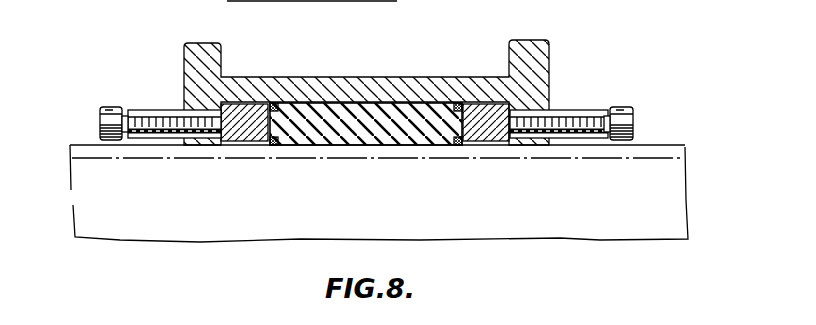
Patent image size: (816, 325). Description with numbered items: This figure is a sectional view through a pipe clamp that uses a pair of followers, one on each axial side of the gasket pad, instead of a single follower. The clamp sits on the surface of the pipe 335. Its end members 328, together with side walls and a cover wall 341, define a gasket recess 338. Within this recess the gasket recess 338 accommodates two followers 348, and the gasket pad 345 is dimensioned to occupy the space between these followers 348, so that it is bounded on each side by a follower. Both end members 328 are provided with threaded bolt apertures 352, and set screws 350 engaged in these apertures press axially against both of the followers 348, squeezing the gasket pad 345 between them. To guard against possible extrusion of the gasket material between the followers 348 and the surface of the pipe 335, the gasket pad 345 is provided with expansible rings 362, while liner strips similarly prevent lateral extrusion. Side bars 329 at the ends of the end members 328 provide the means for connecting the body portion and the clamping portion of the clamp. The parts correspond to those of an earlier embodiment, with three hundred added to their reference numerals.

The end members 328 is at (184, 45).
The side bars 329 is at (561, 9).
The pipe 335 is at (642, 141).
The gasket recess 338 is at (252, 103).
The cover wall 341 is at (418, 86).
The gasket pad 345 is at (345, 140).
The followers 348 is at (246, 136).
The set screws 350 is at (150, 110).
The threaded bolt apertures 352 is at (198, 103).
The expansible rings 362 is at (275, 104).